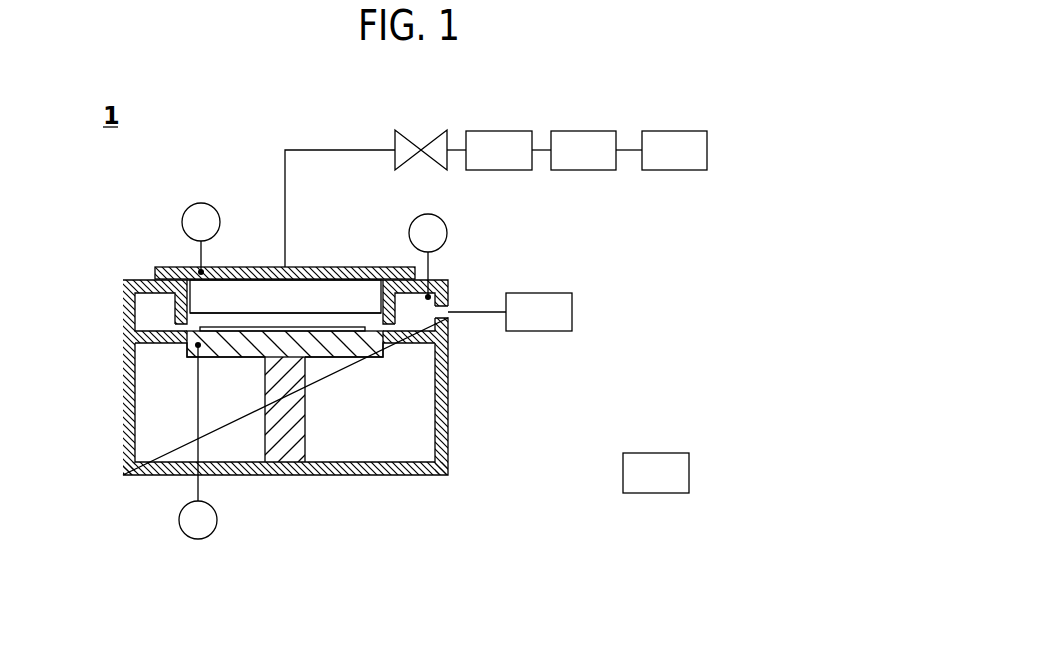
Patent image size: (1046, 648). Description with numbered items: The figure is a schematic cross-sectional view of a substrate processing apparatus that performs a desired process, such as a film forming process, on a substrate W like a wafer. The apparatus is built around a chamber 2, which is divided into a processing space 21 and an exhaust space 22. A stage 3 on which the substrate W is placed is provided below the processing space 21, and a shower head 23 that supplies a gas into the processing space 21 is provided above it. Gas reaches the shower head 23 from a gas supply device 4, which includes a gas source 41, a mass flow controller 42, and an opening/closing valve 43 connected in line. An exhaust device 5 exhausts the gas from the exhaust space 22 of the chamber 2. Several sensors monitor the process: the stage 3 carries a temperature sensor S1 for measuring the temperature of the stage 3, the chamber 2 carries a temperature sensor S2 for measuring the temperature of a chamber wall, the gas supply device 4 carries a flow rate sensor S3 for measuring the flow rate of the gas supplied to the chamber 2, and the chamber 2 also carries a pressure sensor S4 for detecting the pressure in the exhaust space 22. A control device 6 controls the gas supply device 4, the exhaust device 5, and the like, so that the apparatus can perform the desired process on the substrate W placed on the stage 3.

The chamber 2 is at (448, 405).
The stage 3 is at (318, 347).
The gas supply device 4 is at (370, 121).
The gas source 41 is at (678, 131).
The mass flow controller 42 is at (588, 131).
The opening/closing valve 43 is at (433, 134).
The exhaust device 5 is at (542, 293).
The control device 6 is at (660, 453).
The processing space 21 is at (348, 313).
The exhaust space 22 is at (420, 315).
The shower head 23 is at (304, 292).
The substrate W is at (253, 327).
The temperature sensor S1 is at (198, 540).
The temperature sensor S2 is at (182, 222).
The flow rate sensor S3 is at (503, 131).
The pressure sensor S4 is at (447, 233).